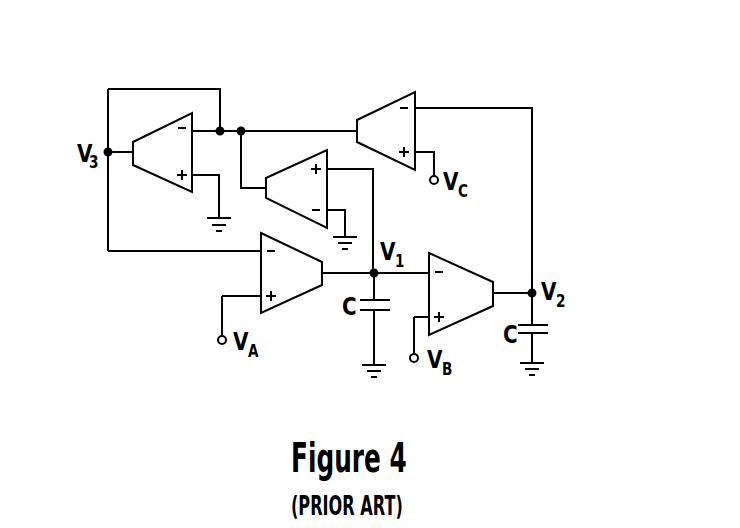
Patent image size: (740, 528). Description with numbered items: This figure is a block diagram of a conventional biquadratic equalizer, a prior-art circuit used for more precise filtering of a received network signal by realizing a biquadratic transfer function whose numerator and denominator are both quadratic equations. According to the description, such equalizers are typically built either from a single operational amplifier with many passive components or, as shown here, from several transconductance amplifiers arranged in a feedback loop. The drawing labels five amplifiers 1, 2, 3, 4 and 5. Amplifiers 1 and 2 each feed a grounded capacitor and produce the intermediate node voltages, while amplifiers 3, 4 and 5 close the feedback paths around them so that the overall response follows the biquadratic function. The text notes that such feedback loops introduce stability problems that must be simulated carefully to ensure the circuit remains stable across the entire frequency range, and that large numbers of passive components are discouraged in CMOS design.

The first integrator operational amplifier 1 is at (291, 273).
The second integrator operational amplifier 2 is at (461, 294).
The third amplifier 3 is at (296, 189).
The fourth amplifier 4 is at (386, 131).
The fifth amplifier 5 is at (162, 152).